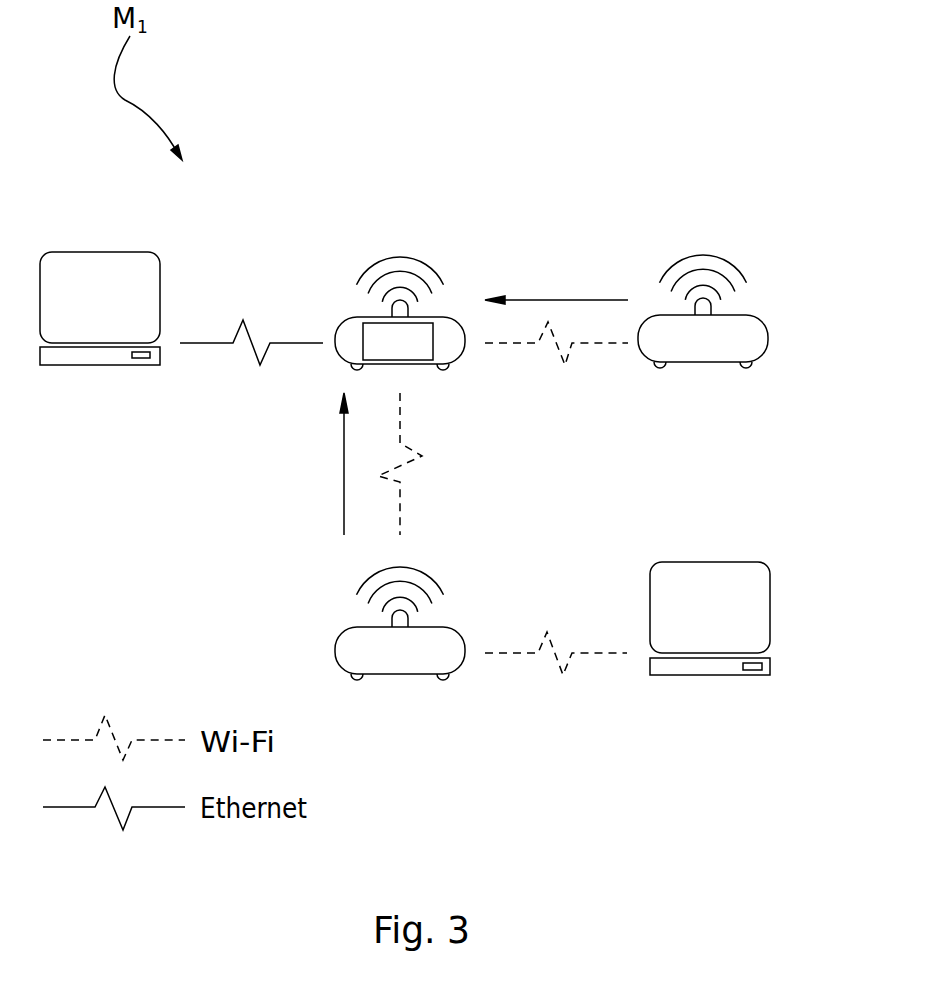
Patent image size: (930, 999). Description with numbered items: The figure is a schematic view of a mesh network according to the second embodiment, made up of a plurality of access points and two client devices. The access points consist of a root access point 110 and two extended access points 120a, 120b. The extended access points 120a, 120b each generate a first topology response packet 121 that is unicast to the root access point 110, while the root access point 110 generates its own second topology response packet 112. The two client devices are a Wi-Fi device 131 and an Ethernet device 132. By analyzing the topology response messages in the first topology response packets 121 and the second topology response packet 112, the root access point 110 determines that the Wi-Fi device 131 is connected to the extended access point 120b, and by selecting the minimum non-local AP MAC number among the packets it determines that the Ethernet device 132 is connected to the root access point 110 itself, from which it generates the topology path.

The root access point 110 is at (418, 271).
The second topology response packet 112 is at (398, 341).
The extended access point 120a is at (741, 272).
The extended access point 120b is at (438, 582).
The first topology response packet 121 is at (557, 298).
The Wi-Fi device 131 is at (712, 562).
The Ethernet device 132 is at (102, 252).